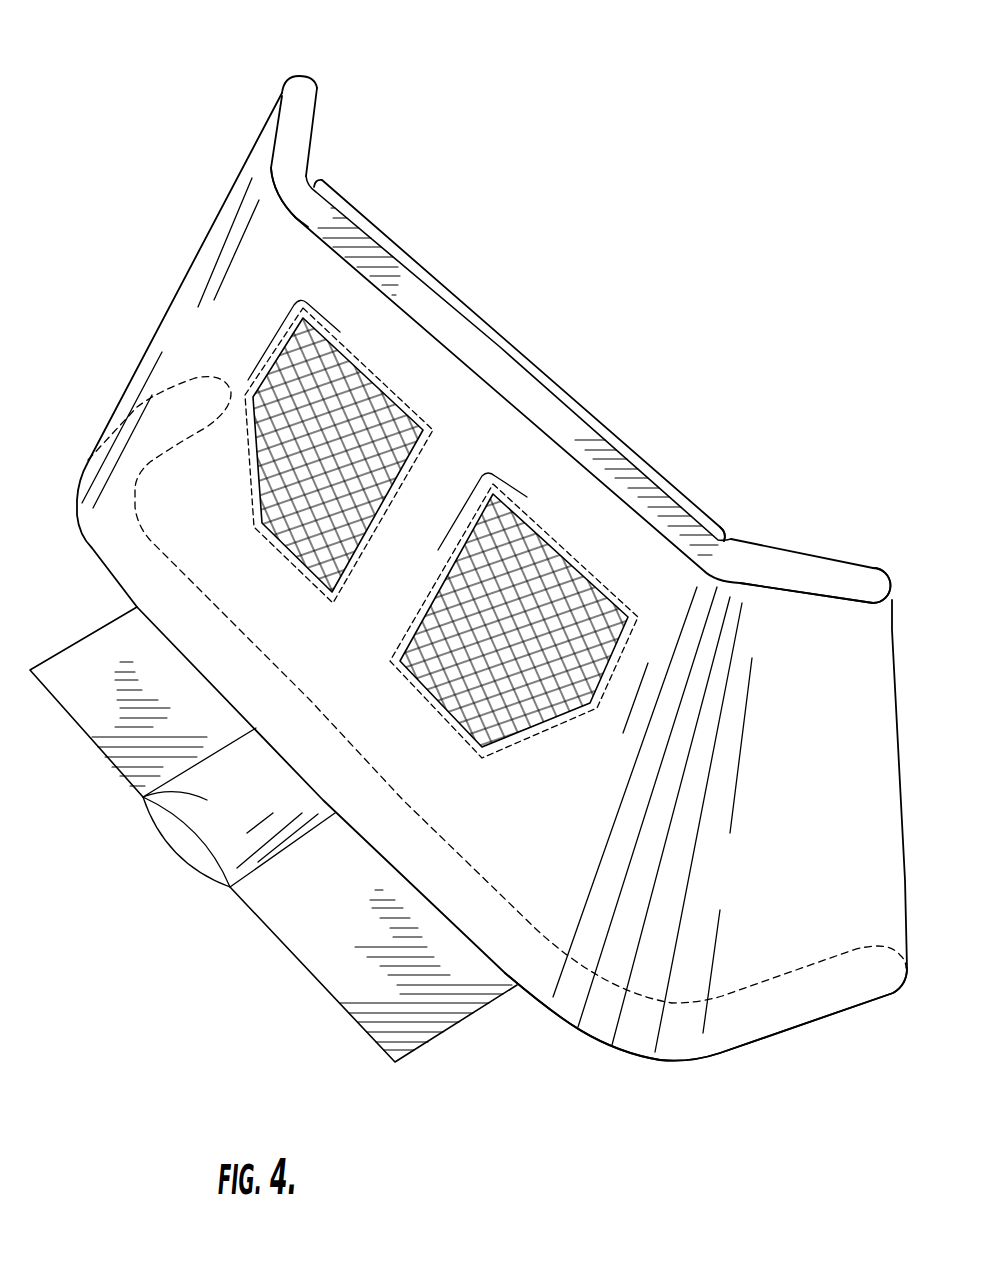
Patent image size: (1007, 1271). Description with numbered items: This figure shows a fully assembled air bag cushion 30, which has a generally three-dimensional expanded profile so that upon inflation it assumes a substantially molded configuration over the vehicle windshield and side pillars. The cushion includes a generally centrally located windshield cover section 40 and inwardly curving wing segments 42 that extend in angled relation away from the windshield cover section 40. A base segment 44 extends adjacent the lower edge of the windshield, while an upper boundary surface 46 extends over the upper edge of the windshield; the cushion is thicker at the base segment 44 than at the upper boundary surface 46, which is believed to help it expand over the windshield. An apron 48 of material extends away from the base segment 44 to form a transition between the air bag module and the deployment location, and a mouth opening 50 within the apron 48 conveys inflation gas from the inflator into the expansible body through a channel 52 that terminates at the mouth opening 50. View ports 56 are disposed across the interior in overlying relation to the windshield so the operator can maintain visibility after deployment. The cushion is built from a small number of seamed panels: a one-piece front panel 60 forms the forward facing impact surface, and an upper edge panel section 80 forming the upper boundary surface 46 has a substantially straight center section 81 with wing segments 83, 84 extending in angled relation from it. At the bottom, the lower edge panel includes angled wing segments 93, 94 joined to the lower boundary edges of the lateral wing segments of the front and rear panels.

The air bag cushion 30 is at (660, 350).
The windshield cover section 40 is at (517, 345).
The wing segments 42 is at (323, 87).
The base segment 44 is at (538, 1000).
The upper boundary surface 46 is at (306, 236).
The apron 48 is at (316, 1002).
The mouth opening 50 is at (167, 843).
The channel 52 is at (143, 797).
The view ports 56 is at (542, 736).
The front panel 60 is at (358, 672).
The upper edge panel section 80 is at (730, 535).
The center section 81 is at (545, 418).
The wing segment of upper edge panel section 83 is at (295, 102).
The wing segment of upper edge panel section 84 is at (877, 587).
The angled wing segment of lower edge panel 93 is at (189, 402).
The angled wing segment of lower edge panel 94 is at (765, 1023).